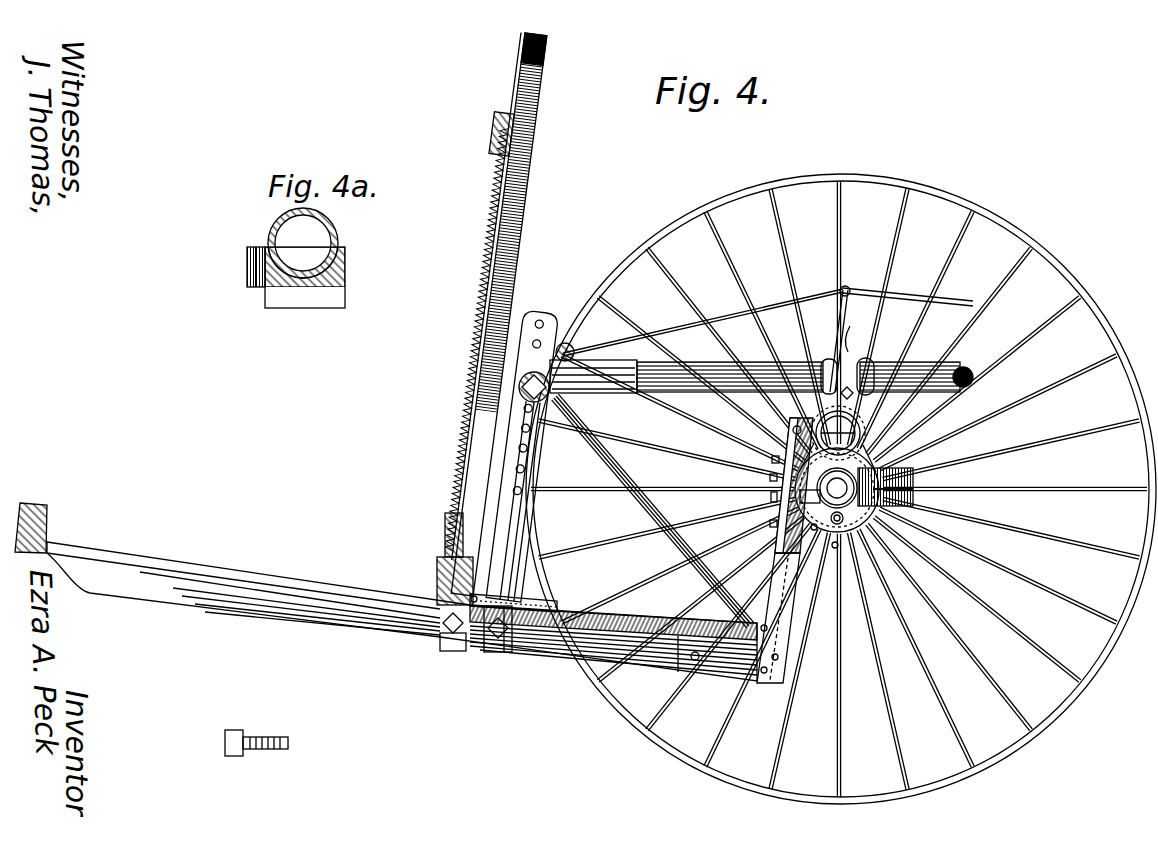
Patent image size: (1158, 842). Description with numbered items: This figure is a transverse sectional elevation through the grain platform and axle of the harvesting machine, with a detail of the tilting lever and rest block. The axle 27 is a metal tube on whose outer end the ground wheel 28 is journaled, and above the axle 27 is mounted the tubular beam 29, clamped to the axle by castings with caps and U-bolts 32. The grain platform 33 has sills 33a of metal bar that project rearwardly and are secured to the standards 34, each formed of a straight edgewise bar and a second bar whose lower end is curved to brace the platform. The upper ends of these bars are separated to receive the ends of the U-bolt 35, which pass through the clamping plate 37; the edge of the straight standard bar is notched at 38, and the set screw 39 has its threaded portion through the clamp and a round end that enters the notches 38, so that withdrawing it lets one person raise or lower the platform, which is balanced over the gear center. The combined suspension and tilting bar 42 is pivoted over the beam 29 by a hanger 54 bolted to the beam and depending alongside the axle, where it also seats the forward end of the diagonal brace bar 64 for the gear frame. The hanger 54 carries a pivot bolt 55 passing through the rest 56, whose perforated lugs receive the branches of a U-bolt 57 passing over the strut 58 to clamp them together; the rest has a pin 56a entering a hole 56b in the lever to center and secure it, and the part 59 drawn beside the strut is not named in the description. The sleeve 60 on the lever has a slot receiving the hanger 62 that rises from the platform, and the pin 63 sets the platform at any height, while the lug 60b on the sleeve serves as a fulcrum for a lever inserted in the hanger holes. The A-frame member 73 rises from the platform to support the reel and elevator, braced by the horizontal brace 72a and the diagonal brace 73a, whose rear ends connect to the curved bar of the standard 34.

In FIG. 4, the axle 27 is at (915, 486).
In FIG. 4, the ground wheel 28 is at (866, 180).
In FIG. 4, the tubular beam 29 is at (868, 432).
In FIG. 4, the U-bolts 32 is at (832, 425).
In FIG. 4, the grain platform 33 is at (293, 600).
In FIG. 4, the sills 33a is at (545, 652).
In FIG. 4, the standards 34 is at (770, 686).
In FIG. 4, the U-bolt 35 is at (792, 450).
In FIG. 4, the clamping plate 37 is at (771, 497).
In FIG. 4, the notches 38 is at (814, 530).
In FIG. 4, the set screw 39 is at (772, 478).
In FIG. 4, the suspension and tilting bar 42 is at (740, 366).
In FIG. 4A, the suspension and tilting bar 42 is at (332, 232).
In FIG. 4, the hanger 54 is at (905, 376).
In FIG. 4, the pivot bolt 55 is at (824, 364).
In FIG. 4, the rest 56 is at (872, 362).
In FIG. 4A, the rest 56 is at (345, 280).
In FIG. 4A, the pin 56a is at (265, 282).
In FIG. 4A, the hole 56b is at (262, 262).
In FIG. 4, the U-bolt 57 is at (840, 290).
In FIG. 4, the strut 58 is at (851, 310).
In FIG. 4, the lever 59 is at (905, 296).
In FIG. 4, the sleeve 60 is at (593, 376).
In FIG. 4, the lug 60b is at (572, 345).
In FIG. 4, the hanger 62 is at (520, 525).
In FIG. 4, the pin 63 is at (519, 388).
In FIG. 4, the diagonal brace bar 64 is at (914, 493).
In FIG. 4, the horizontal brace 72a is at (558, 604).
In FIG. 4, the A-frame member 73 is at (522, 241).
In FIG. 4, the diagonal brace 73a is at (620, 472).